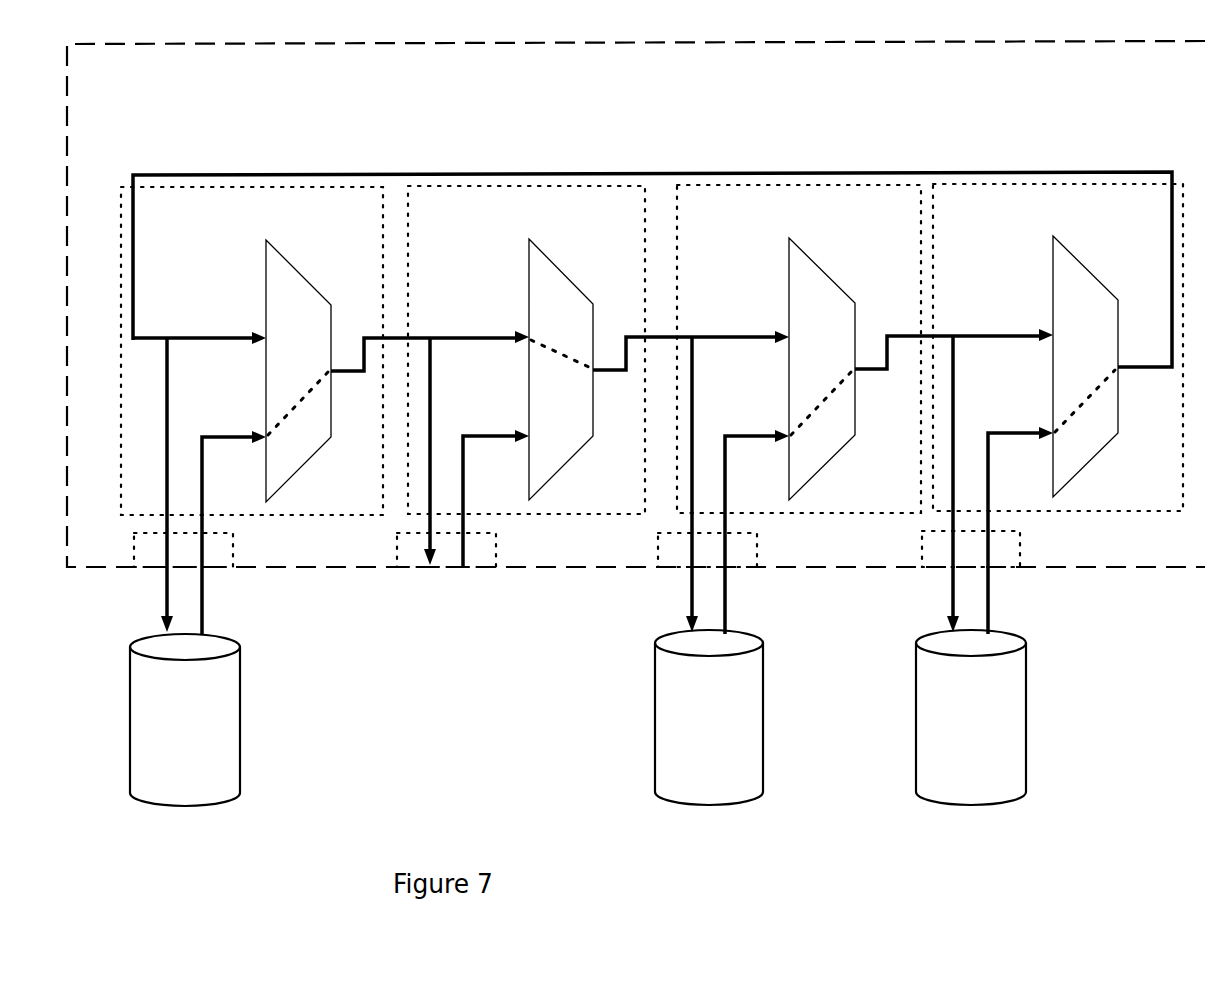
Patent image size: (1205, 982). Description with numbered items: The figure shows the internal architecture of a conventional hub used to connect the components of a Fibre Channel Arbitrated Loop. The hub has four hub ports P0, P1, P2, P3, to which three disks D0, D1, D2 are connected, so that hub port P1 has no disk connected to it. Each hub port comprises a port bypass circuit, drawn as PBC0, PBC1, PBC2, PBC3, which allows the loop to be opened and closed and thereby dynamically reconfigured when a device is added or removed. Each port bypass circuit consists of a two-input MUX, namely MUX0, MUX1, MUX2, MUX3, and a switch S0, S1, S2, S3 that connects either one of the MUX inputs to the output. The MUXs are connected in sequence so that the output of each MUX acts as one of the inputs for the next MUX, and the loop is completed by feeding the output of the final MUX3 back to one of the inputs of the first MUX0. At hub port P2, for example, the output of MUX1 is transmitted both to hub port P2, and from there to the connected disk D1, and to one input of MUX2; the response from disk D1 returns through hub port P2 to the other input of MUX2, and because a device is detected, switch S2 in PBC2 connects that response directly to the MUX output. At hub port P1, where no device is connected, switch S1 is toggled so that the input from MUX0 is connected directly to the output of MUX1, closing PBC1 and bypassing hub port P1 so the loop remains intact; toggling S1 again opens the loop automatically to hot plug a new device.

The port bypass circuit PBC0 is at (252, 351).
The port bypass circuit PBC1 is at (526, 350).
The port bypass circuit PBC2 is at (799, 349).
The port bypass circuit PBC3 is at (1058, 347).
The two-input MUX MUX0 is at (296, 355).
The two-input MUX MUX1 is at (560, 352).
The two-input MUX MUX2 is at (817, 352).
The two-input MUX MUX3 is at (1085, 350).
The switch S0 is at (298, 397).
The switch S1 is at (561, 365).
The switch S2 is at (821, 399).
The switch S3 is at (1085, 394).
The hub port P0 is at (166, 550).
The hub port P1 is at (430, 550).
The hub port P2 is at (692, 550).
The hub port P3 is at (954, 549).
The disk D0 is at (185, 720).
The disk D1 is at (709, 717).
The disk D2 is at (971, 717).